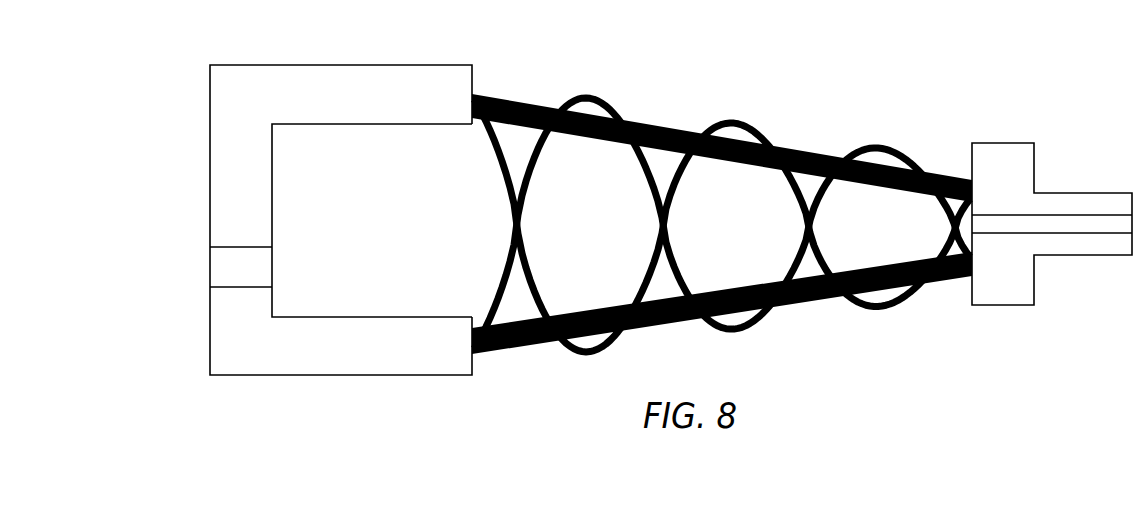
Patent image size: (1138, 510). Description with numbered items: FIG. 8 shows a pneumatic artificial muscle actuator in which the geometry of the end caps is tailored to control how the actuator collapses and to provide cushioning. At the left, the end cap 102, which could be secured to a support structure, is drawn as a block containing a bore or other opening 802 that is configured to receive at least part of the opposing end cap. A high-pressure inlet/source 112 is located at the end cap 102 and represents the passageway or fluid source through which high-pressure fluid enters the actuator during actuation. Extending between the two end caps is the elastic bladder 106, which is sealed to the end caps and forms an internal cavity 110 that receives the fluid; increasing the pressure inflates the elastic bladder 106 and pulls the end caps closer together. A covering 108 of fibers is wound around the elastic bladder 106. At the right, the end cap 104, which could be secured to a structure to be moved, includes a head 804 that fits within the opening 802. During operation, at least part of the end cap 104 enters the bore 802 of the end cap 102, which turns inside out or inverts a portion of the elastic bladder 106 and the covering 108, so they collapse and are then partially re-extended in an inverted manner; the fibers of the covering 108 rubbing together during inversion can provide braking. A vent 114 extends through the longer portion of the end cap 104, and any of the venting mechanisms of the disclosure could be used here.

The end cap 102 is at (473, 363).
The bore or opening 802 is at (388, 153).
The high-pressure inlet/source 112 is at (258, 246).
The elastic bladder 106 is at (540, 96).
The covering 108 is at (880, 148).
The internal cavity 110 is at (749, 233).
The end cap 104 is at (1026, 327).
The head 804 is at (1047, 249).
The vent 114 is at (1027, 233).